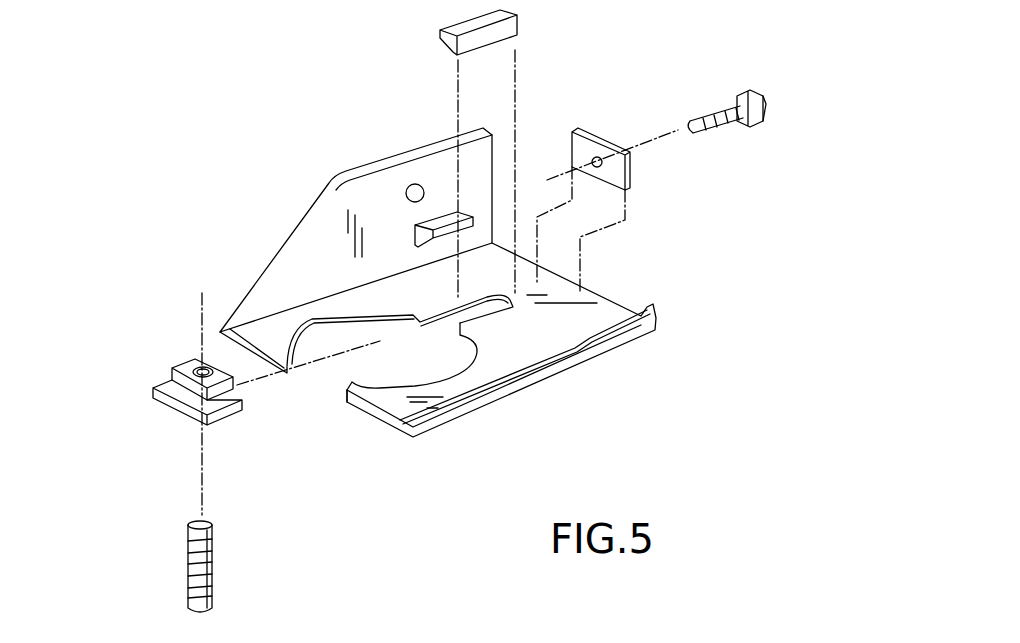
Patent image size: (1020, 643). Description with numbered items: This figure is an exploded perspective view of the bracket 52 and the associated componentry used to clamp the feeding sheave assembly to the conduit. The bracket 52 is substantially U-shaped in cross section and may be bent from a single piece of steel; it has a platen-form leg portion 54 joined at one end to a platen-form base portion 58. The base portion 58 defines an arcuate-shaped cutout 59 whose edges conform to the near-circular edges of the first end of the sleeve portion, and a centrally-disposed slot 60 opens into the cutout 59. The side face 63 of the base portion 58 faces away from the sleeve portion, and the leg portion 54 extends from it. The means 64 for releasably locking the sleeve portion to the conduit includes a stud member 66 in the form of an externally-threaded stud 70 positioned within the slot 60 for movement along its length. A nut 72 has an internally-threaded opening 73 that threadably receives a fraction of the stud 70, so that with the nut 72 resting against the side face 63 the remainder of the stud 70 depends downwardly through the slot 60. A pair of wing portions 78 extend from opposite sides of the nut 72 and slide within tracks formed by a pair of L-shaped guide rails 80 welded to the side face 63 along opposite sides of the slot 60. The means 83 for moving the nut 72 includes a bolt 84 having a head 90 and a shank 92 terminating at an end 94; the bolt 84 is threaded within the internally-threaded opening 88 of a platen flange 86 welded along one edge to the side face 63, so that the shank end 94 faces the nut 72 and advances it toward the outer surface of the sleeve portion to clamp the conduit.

The bracket 52 is at (600, 357).
The leg portion 54 is at (296, 228).
The base portion 58 is at (472, 379).
The arcuate-shaped cutout 59 is at (348, 404).
The centrally-disposed slot 60 is at (495, 305).
The side face 63 is at (597, 313).
The means for releasably locking 64 is at (777, 149).
The stud member 66 is at (210, 568).
The externally-threaded stud 70 is at (188, 548).
The nut 72 is at (172, 367).
The internally-threaded opening 73 is at (192, 360).
The wing portions 78 is at (153, 389).
The guide rails 80 is at (443, 216).
The means for moving 83 is at (792, 116).
The bolt 84 is at (765, 102).
The platen flange 86 is at (593, 132).
The internally-threaded opening 88 is at (596, 168).
The head 90 is at (752, 90).
The shank 92 is at (724, 125).
The end 94 is at (688, 124).